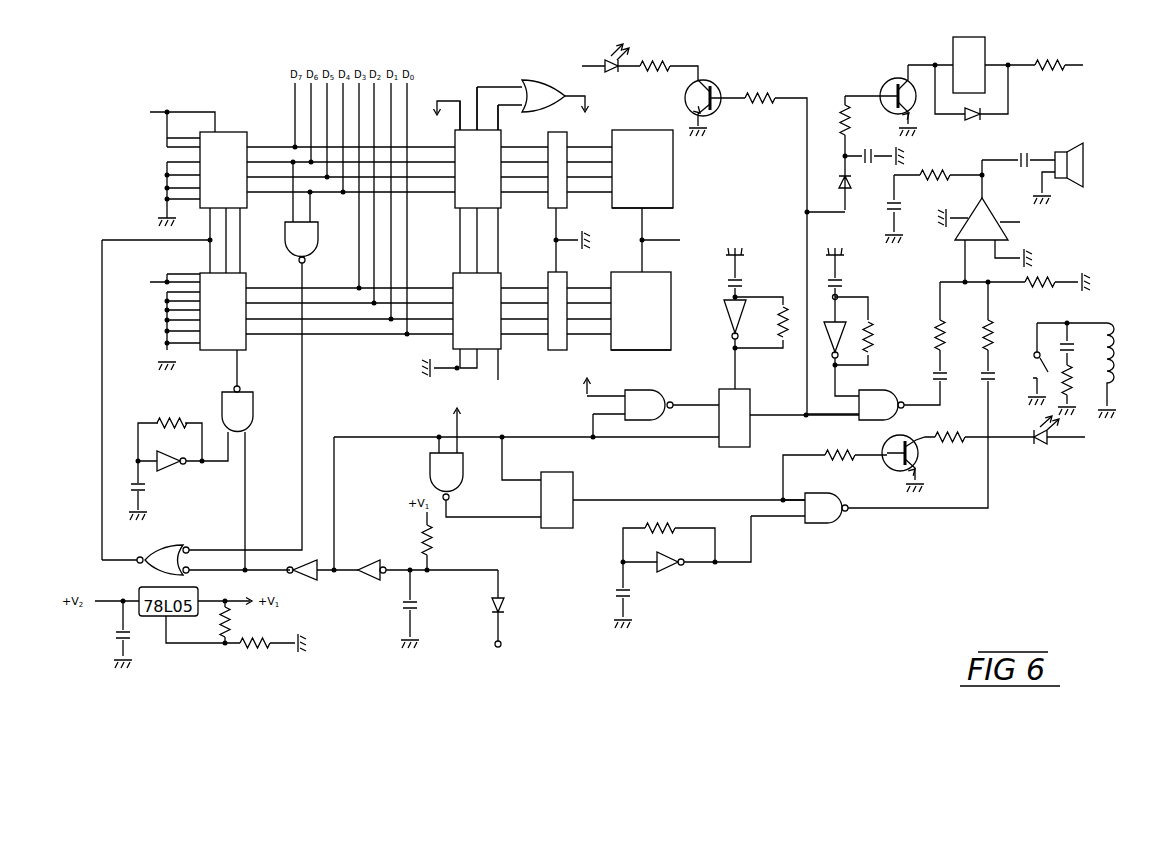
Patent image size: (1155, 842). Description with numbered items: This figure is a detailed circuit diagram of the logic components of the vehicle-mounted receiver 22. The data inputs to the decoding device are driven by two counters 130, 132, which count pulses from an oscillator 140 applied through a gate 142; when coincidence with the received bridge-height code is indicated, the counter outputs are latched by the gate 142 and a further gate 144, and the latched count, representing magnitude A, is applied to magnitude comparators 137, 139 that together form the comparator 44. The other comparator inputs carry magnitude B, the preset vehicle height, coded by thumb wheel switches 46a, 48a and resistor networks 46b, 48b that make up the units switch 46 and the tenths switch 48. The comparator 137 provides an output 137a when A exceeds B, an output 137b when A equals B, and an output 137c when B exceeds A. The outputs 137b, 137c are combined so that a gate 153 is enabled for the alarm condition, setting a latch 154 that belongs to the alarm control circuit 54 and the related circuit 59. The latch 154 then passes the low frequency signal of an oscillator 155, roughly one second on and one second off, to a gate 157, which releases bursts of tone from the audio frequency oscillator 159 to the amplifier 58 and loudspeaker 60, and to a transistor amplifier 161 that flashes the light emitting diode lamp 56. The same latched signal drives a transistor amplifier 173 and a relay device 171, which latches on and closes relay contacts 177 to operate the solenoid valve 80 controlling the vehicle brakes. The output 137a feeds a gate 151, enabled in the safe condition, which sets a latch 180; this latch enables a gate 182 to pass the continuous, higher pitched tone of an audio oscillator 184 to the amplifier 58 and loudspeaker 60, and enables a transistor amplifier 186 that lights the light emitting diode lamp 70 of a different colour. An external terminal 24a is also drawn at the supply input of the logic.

The counter 130 is at (247, 201).
The counter 132 is at (249, 342).
The gate 142 is at (251, 404).
The oscillator 140 is at (179, 468).
The gate 144 is at (152, 548).
The magnitude comparator 137 is at (455, 212).
The output 137a is at (455, 102).
The output 137b is at (478, 102).
The output 137c is at (500, 106).
The magnitude comparator 139 is at (455, 273).
The comparator 44 is at (501, 236).
The thumb wheel switch 46 is at (676, 199).
The thumb wheel switch 46a is at (673, 178).
The resistor network 46b is at (560, 200).
The thumb wheel switch 48 is at (670, 338).
The thumb wheel switch 48a is at (668, 280).
The resistor network 48b is at (566, 282).
The warning light 56 is at (624, 58).
The transistor amplifier 161 is at (712, 84).
The receiver 22 is at (862, 50).
The transistor amplifier 173 is at (884, 82).
The relay device 171 is at (985, 48).
The loudspeaker 60 is at (1085, 164).
The amplifier 58 is at (1010, 232).
The oscillator 155 is at (754, 300).
The oscillator 159 is at (846, 336).
The gate 157 is at (874, 394).
The relay contacts 177 is at (1031, 352).
The solenoid valve 80 is at (1115, 357).
The gate 153 is at (638, 404).
The control circuit 59 is at (693, 401).
The latch 154 is at (745, 442).
The control circuit 54 is at (634, 488).
The gate 151 is at (452, 484).
The latch 180 is at (561, 528).
The terminal 24a is at (503, 622).
The transistor amplifier 186 is at (917, 454).
The green light 70 is at (1042, 445).
The gate 182 is at (822, 523).
The audio oscillator 184 is at (668, 572).